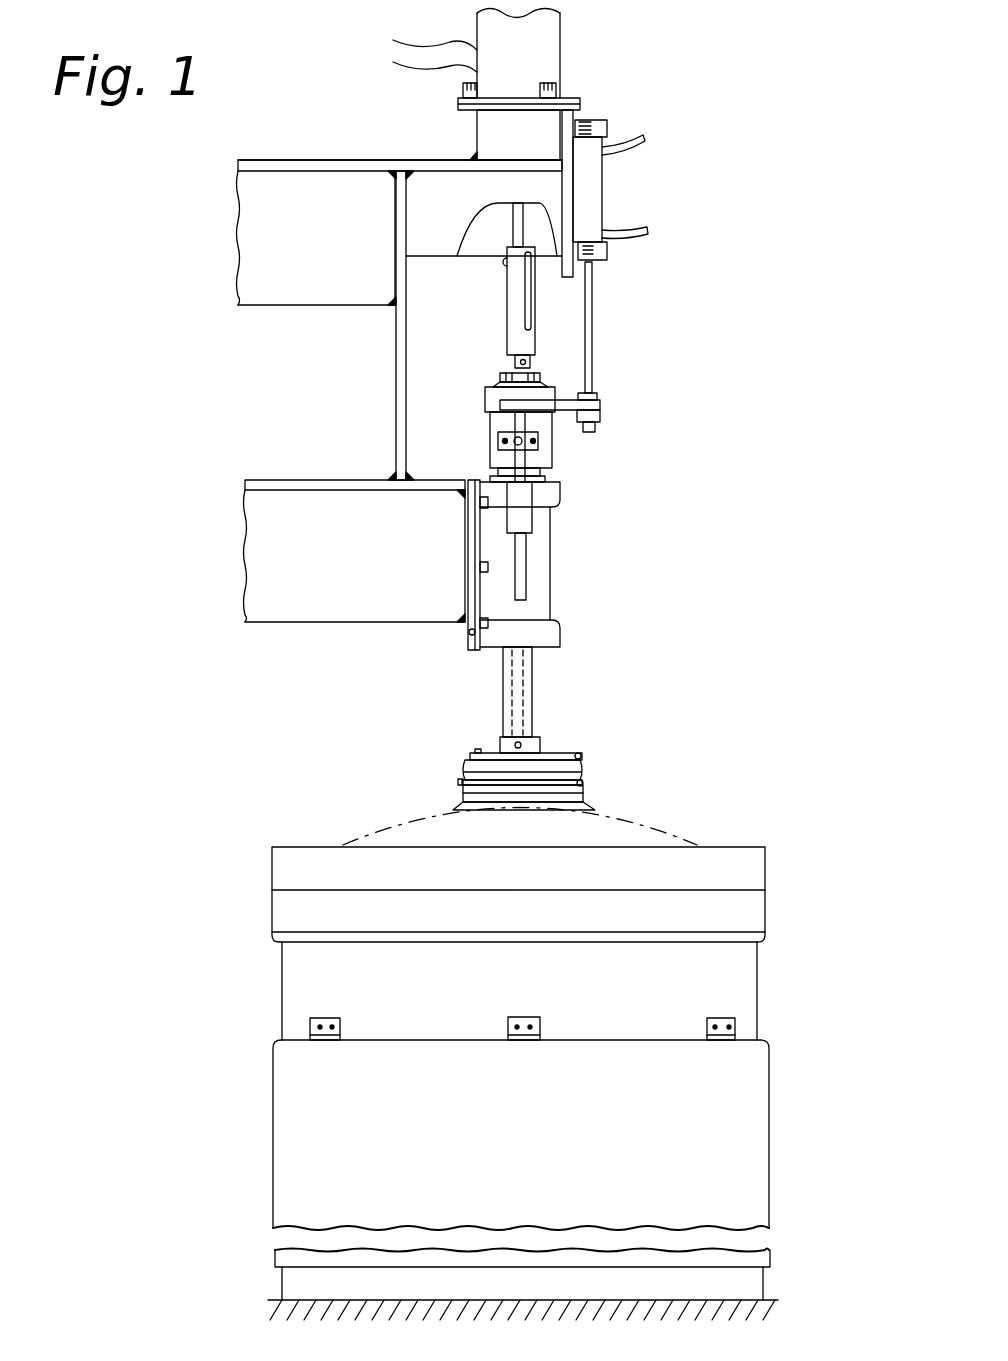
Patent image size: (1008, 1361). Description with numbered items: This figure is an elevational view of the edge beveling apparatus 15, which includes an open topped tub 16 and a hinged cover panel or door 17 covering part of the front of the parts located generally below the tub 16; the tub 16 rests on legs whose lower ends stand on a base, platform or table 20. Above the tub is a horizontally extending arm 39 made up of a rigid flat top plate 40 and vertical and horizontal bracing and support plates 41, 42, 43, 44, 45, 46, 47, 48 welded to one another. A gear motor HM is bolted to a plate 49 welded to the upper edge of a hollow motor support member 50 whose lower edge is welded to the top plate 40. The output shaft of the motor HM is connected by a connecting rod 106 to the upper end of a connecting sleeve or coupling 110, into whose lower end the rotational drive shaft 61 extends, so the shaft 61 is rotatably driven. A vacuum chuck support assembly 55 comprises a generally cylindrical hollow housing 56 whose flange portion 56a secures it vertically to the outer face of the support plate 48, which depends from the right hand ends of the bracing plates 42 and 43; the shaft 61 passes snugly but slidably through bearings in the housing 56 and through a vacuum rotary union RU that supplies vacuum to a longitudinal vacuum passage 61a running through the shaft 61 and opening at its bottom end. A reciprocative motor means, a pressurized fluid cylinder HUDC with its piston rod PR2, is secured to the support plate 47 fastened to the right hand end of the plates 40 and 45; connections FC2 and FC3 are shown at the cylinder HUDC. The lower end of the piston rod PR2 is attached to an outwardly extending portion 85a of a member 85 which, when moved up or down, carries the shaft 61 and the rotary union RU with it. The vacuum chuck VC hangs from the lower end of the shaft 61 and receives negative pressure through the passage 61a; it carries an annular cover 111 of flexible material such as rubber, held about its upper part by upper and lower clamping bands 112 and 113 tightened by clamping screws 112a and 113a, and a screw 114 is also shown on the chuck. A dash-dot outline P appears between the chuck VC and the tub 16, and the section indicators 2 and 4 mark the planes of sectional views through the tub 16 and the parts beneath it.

The gear motor HM is at (522, 64).
The plate 49 is at (462, 110).
The hollow motor support member 50 is at (521, 150).
The rigid flat top plate 40 is at (347, 165).
The horizontally extending arm 39 is at (288, 152).
The support plate 47 is at (562, 183).
The pressurized fluid cylinder HUDC is at (590, 183).
The fluid conduit FC3 is at (644, 140).
The fluid conduit FC2 is at (650, 233).
The bracing and support plate 41 is at (331, 268).
The bracing and support plate 44 is at (396, 377).
The bracing and support plate 45 is at (452, 228).
The bracing and support plate 46 is at (512, 242).
The connecting rod 106 is at (525, 222).
The connecting sleeve or coupling 110 is at (508, 307).
The member 85 is at (490, 397).
The outwardly extending portion 85a is at (600, 405).
The piston rod PR2 is at (592, 312).
The vacuum rotary union RU is at (542, 457).
The bracing plate 42 is at (272, 485).
The bracing plate 43 is at (366, 572).
The support plate 48 is at (468, 537).
The flange portion 56a is at (478, 587).
The vacuum chuck support assembly 55 is at (460, 636).
The hollow housing 56 is at (540, 560).
The rotational drive shaft 61 is at (527, 660).
The longitudinal vacuum passage 61a is at (518, 683).
The screw 114 is at (518, 742).
The upper clamping band 112 is at (553, 752).
The clamping screw 112a is at (582, 756).
The annular cover 111 is at (465, 770).
The lower clamping band 113 is at (462, 783).
The clamping screw 113a is at (583, 783).
The vacuum chuck VC is at (583, 768).
The product dome P is at (377, 818).
The edge beveling apparatus 15 is at (733, 820).
The open topped tub 16 is at (757, 985).
The hinged cover panel or door 17 is at (537, 1129).
The base, platform or table 20 is at (565, 1298).
The section line 2- 2 is at (275, 827).
The section line 4- 4 is at (300, 1173).